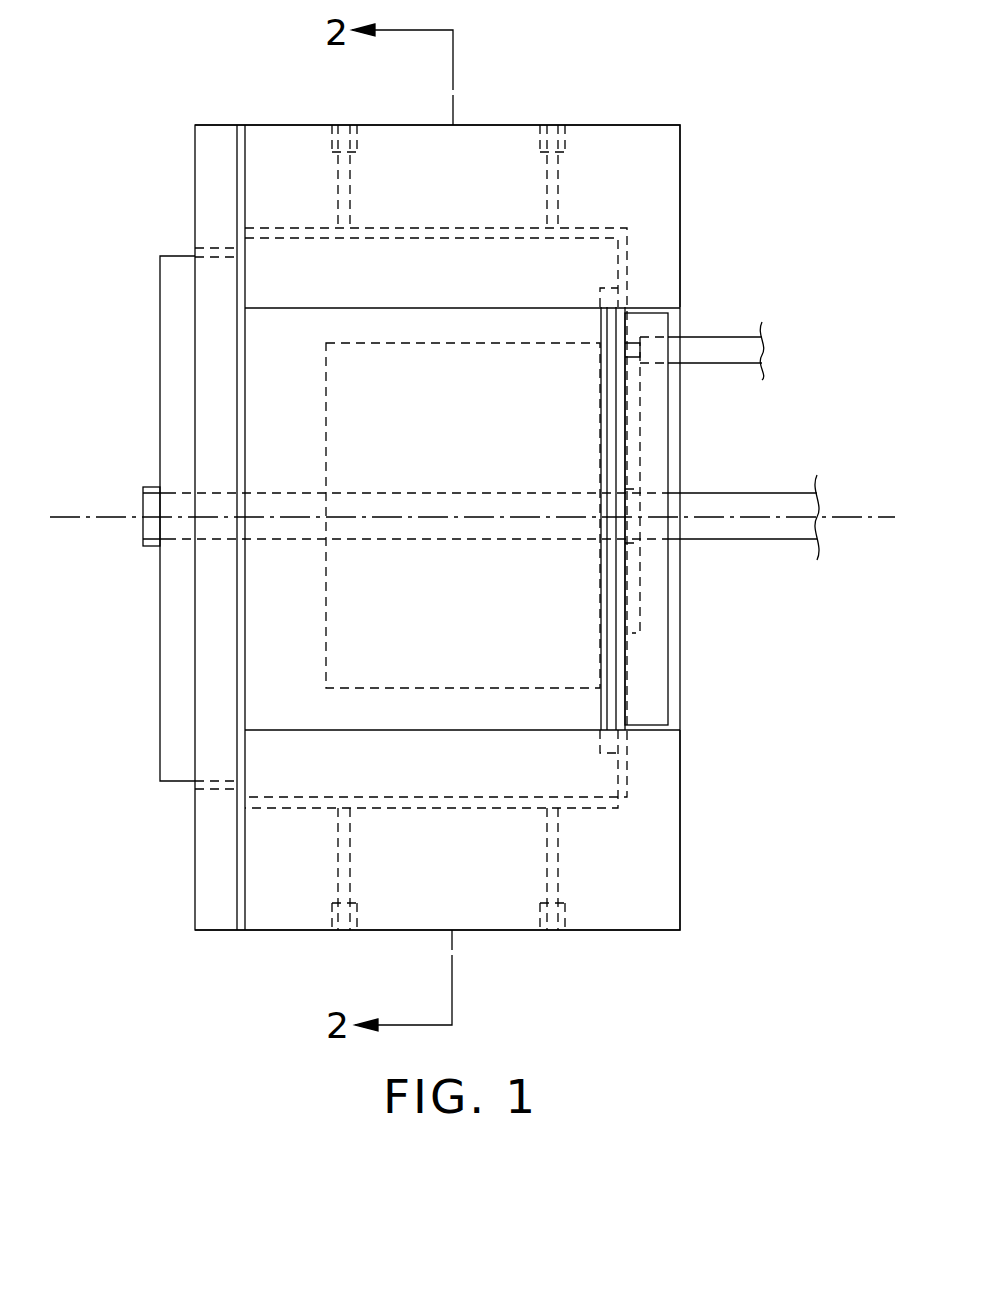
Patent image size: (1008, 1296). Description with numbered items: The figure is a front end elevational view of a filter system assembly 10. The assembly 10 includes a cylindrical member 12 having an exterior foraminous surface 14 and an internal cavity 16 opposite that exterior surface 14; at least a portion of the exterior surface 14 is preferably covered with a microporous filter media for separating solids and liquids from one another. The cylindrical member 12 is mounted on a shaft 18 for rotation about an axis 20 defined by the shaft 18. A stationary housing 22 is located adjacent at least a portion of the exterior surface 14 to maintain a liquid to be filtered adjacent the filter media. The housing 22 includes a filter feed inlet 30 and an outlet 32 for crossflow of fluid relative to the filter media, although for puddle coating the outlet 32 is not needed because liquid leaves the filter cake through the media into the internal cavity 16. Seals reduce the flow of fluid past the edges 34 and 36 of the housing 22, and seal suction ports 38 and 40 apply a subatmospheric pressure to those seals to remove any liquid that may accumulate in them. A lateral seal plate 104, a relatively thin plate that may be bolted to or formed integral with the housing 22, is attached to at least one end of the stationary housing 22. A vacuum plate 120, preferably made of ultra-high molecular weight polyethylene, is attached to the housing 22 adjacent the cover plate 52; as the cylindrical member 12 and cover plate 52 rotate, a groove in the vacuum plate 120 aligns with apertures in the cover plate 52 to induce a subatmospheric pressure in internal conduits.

The filter system assembly 10 is at (792, 146).
The cylindrical member 12 is at (585, 265).
The exterior foraminous surface 14 is at (178, 236).
The internal cavity 16 is at (512, 454).
The shaft 18 is at (731, 500).
The axis 20 is at (848, 514).
The stationary housing 22 is at (680, 206).
The filter feed inlet 30 is at (555, 931).
The outlet 32 is at (555, 125).
The edge of the housing 34 is at (458, 732).
The edge of the housing 36 is at (418, 307).
The seal suction port 38 is at (338, 931).
The seal suction port 40 is at (338, 125).
The cover plate 52 is at (612, 703).
The lateral seal plate 104 is at (212, 876).
The vacuum plate 120 is at (655, 629).